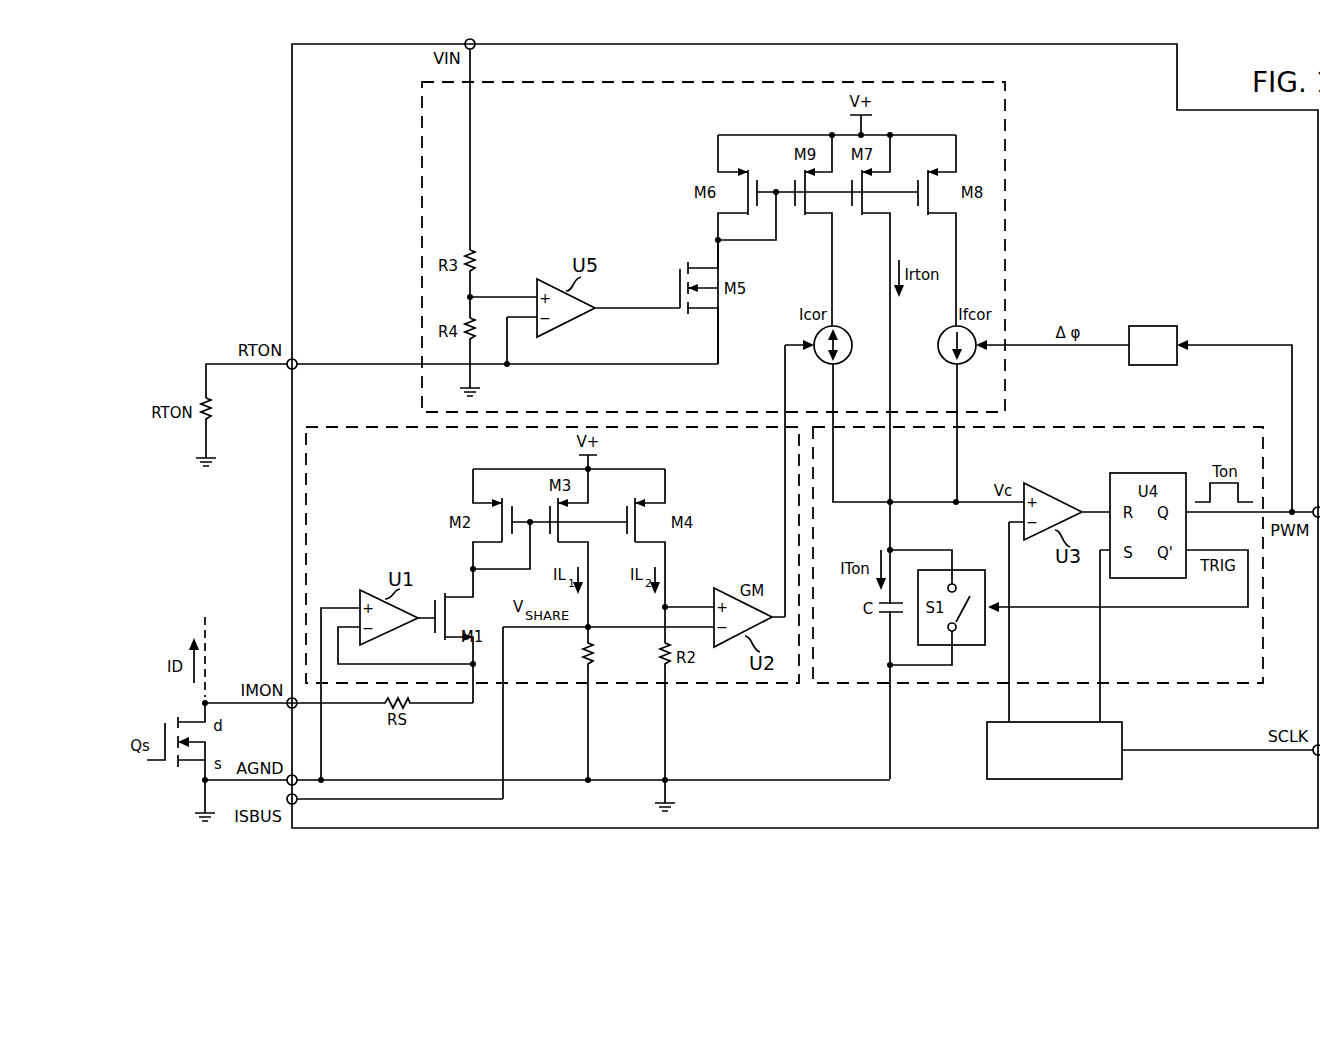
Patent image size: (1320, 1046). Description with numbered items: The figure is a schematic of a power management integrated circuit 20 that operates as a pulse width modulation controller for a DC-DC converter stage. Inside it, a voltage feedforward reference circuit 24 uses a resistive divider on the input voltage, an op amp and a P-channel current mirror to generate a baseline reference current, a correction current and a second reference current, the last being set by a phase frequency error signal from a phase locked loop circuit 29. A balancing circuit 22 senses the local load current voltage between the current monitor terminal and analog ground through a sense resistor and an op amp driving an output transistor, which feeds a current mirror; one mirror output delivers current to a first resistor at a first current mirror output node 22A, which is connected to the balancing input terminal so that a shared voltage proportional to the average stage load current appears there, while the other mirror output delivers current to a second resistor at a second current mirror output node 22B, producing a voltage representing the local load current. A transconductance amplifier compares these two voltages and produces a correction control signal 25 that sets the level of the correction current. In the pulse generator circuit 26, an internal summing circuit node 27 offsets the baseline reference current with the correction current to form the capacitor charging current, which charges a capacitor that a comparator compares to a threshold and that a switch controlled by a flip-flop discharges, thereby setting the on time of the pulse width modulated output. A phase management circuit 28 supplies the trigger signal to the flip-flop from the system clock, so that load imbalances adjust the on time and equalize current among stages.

The power management integrated circuit 20 is at (1147, 234).
The balancing circuit 22 is at (378, 515).
The first current mirror output node 22A is at (593, 631).
The second current mirror output node 22B is at (668, 603).
The reference circuit 24 is at (545, 210).
The correction control signal 25 is at (785, 497).
The pulse generator circuit 26 is at (1170, 422).
The internal summing circuit node 27 is at (895, 548).
The phase management circuit 28 is at (987, 760).
The phase locked loop circuit 29 is at (1153, 325).